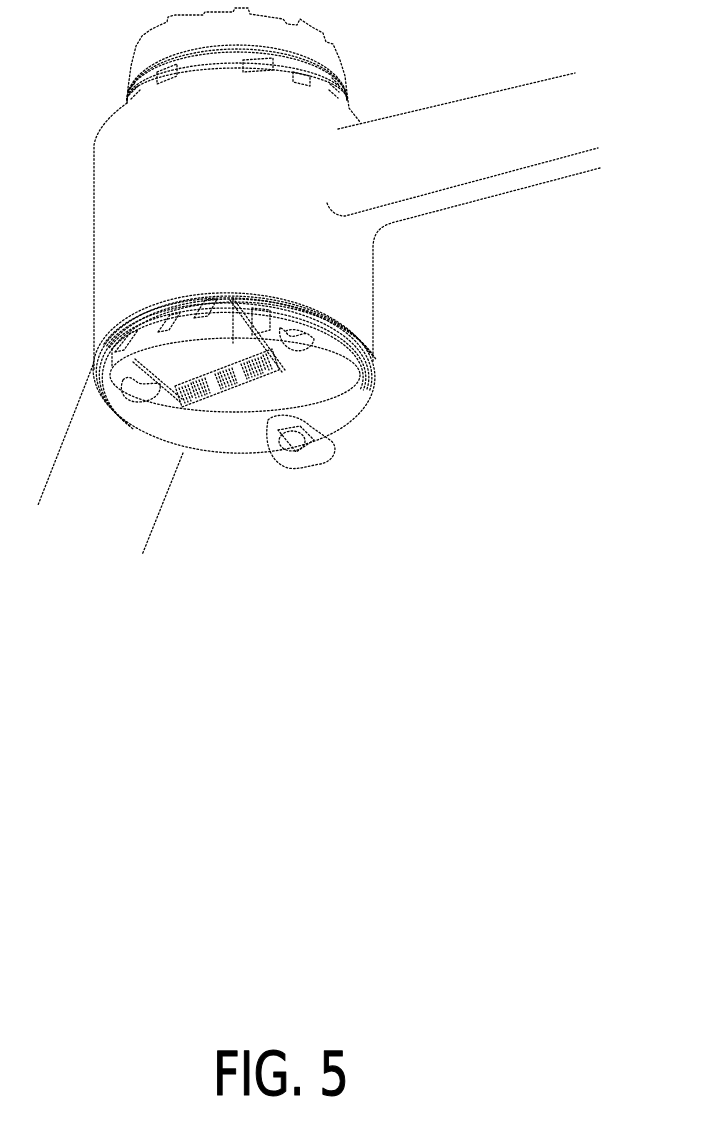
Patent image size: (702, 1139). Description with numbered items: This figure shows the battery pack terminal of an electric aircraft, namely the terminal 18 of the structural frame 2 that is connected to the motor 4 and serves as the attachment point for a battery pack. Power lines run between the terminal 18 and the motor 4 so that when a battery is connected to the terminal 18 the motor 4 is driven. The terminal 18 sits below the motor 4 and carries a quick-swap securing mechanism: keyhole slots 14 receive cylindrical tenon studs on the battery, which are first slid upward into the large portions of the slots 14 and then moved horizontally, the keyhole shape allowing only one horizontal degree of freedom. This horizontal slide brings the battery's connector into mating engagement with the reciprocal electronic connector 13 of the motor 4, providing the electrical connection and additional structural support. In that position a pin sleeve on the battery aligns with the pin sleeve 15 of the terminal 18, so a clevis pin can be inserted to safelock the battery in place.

The structural frame 2 is at (88, 236).
The motor 4 is at (122, 62).
The reciprocal electronic connector 13 is at (212, 400).
The keyhole slots 14 is at (313, 335).
The pin sleeve 15 is at (309, 453).
The terminal 18 is at (298, 392).